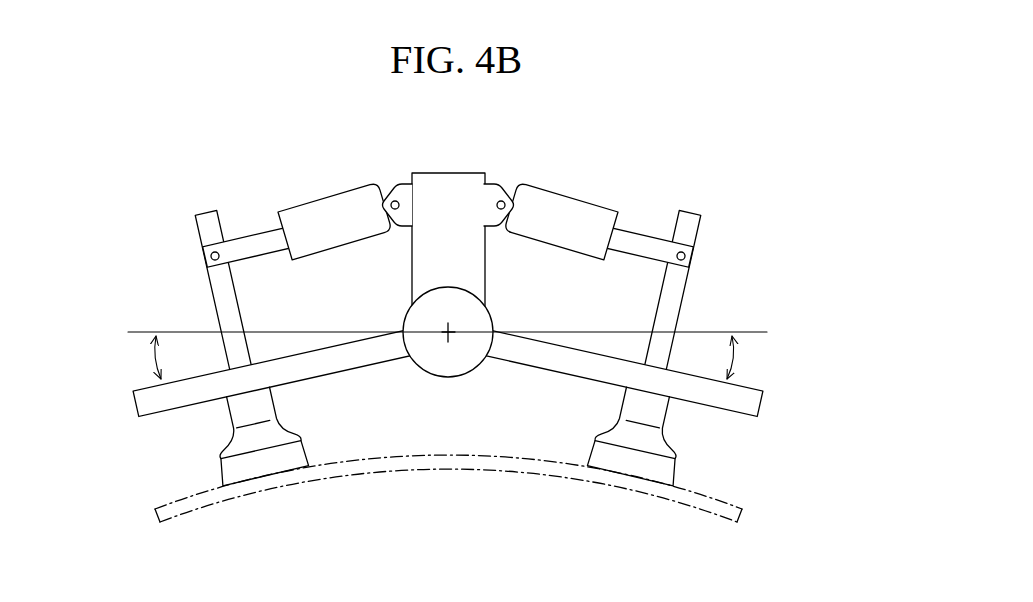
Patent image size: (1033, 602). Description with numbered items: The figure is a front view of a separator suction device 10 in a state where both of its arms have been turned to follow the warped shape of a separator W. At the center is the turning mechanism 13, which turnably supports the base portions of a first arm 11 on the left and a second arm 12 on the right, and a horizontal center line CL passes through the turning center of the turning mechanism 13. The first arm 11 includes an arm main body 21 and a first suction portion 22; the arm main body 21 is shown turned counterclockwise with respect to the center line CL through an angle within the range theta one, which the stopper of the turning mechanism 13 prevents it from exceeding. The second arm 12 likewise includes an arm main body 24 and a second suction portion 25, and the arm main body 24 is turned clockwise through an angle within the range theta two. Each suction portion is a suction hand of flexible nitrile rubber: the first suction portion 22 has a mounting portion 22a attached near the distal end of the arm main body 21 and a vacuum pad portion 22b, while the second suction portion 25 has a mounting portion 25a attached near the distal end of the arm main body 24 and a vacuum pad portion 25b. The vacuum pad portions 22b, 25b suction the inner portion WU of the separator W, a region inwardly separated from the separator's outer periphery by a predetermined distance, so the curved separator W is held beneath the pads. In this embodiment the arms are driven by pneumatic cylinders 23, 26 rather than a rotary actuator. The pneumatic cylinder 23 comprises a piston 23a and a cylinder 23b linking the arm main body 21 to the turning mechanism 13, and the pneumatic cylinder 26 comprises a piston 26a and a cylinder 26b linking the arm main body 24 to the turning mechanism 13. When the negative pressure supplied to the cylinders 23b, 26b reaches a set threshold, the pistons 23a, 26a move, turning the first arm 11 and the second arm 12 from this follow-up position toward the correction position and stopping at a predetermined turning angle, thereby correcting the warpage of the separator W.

The separator suction device 10 is at (720, 196).
The first arm 11 is at (128, 420).
The second arm 12 is at (772, 420).
The turning mechanism 13 is at (492, 317).
The arm main body 21 is at (130, 408).
The first suction portion 22 is at (240, 443).
The mounting portion 22a is at (227, 410).
The vacuum pad portion 22b is at (223, 472).
The pneumatic cylinder 23 is at (330, 167).
The piston 23a is at (240, 243).
The cylinder 23b is at (318, 222).
The arm main body 24 is at (765, 408).
The second suction portion 25 is at (655, 444).
The mounting portion 25a is at (670, 410).
The vacuum pad portion 25b is at (670, 470).
The pneumatic cylinder 26 is at (680, 167).
The piston 26a is at (656, 243).
The cylinder 26b is at (580, 222).
The center line CL is at (755, 331).
The separator W is at (705, 506).
The inner portion WU is at (262, 481).